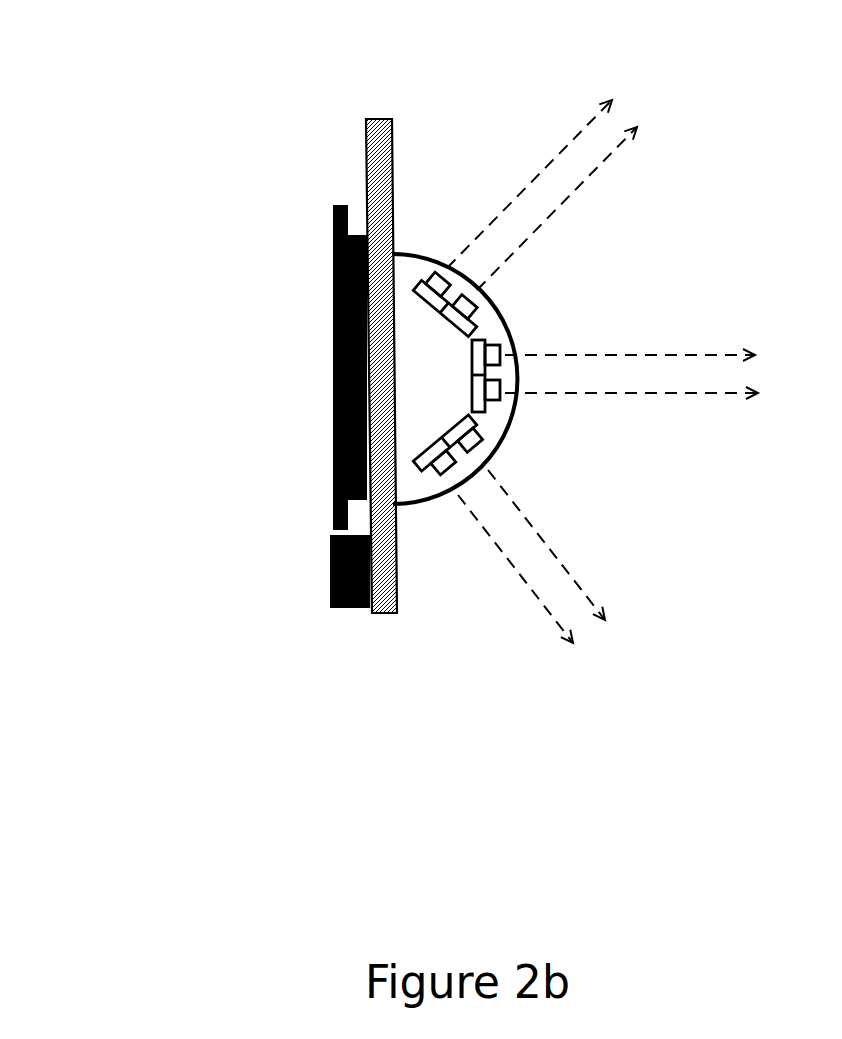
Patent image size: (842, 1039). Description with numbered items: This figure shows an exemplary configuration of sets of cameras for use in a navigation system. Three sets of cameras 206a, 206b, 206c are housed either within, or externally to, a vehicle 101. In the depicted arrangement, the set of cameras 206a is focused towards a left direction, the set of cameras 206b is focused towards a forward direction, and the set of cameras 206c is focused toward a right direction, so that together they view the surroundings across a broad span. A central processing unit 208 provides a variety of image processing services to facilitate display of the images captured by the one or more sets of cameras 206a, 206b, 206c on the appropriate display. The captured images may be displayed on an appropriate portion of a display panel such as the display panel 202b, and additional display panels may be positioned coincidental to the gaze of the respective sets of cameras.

The vehicle 101 is at (572, 453).
The display panel 202b is at (198, 367).
The set of cameras 206a is at (414, 182).
The set of cameras 206b is at (513, 396).
The set of cameras 206c is at (488, 450).
The central processing unit 208 is at (512, 627).